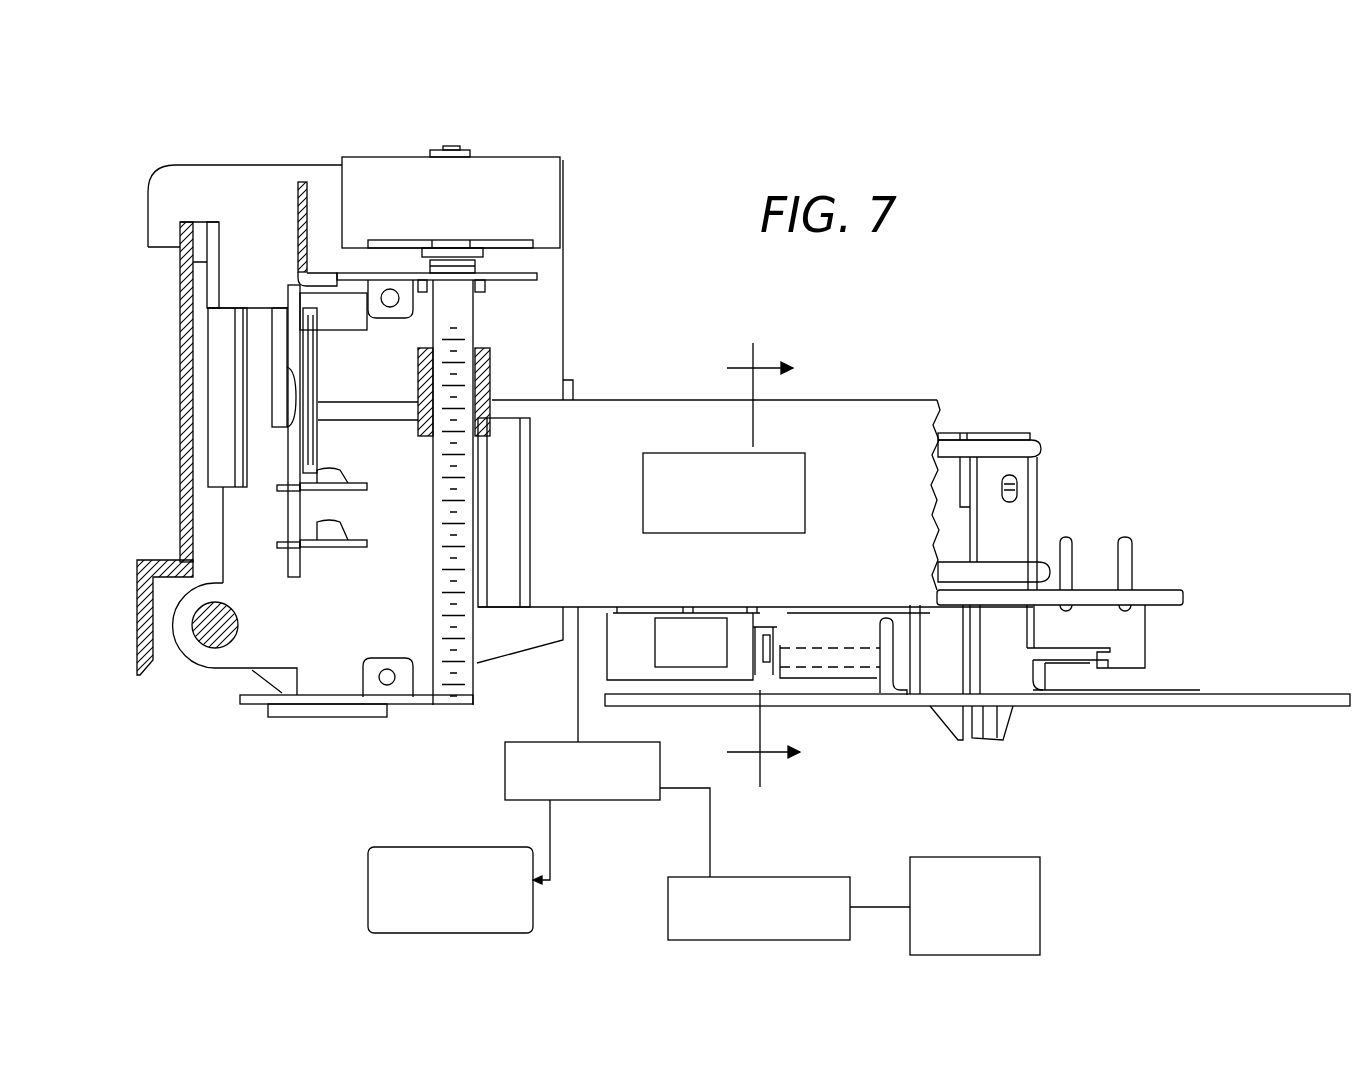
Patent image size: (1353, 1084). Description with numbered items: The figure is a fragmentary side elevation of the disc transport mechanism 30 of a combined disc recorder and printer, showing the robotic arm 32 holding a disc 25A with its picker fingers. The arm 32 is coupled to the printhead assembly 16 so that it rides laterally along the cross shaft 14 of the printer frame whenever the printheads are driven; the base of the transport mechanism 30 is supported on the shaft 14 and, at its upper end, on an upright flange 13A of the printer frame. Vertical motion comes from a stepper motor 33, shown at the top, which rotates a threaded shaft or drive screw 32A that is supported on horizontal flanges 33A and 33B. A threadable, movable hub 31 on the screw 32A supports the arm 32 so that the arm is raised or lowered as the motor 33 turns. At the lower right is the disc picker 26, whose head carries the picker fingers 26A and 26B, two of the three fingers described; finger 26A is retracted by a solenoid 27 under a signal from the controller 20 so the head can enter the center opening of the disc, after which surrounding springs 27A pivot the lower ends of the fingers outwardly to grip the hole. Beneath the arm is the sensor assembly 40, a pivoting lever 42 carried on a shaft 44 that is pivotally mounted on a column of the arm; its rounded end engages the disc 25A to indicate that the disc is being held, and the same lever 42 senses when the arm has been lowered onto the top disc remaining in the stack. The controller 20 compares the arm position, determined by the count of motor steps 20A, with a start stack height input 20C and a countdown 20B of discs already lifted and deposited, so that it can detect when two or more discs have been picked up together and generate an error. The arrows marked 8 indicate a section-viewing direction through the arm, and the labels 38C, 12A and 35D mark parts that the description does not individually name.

The housing cover 38C is at (270, 163).
The slot in side wall 12A is at (200, 230).
The upright flange 13A is at (180, 497).
The motor mounting bracket 35D is at (308, 182).
The stepper motor 33 is at (500, 183).
The horizontal flange 33A is at (537, 252).
The threadable and moveable hub 31 is at (500, 345).
The printhead assembly 16 is at (523, 353).
The robotic arm 32 is at (800, 427).
The threaded shaft 32A is at (460, 628).
The cross shaft 14 is at (240, 621).
The disc transport mechanism 30 is at (330, 680).
The horizontal flange 33B is at (423, 705).
The solenoid 27 is at (743, 533).
The section line 8- 8 is at (778, 557).
The sensor assembly 40 is at (797, 683).
The shaft 44 is at (780, 650).
The pivoting lever 42 is at (905, 693).
The disc 25A is at (1190, 706).
The picker finger 26A is at (943, 727).
The disc gripper 26 is at (1040, 520).
The picker finger 26B is at (1003, 435).
The springs 27A is at (1040, 447).
The controller 20 is at (583, 800).
The motor steps 20A is at (402, 847).
The start stack height input 20C is at (775, 877).
The countdown 20B is at (990, 857).